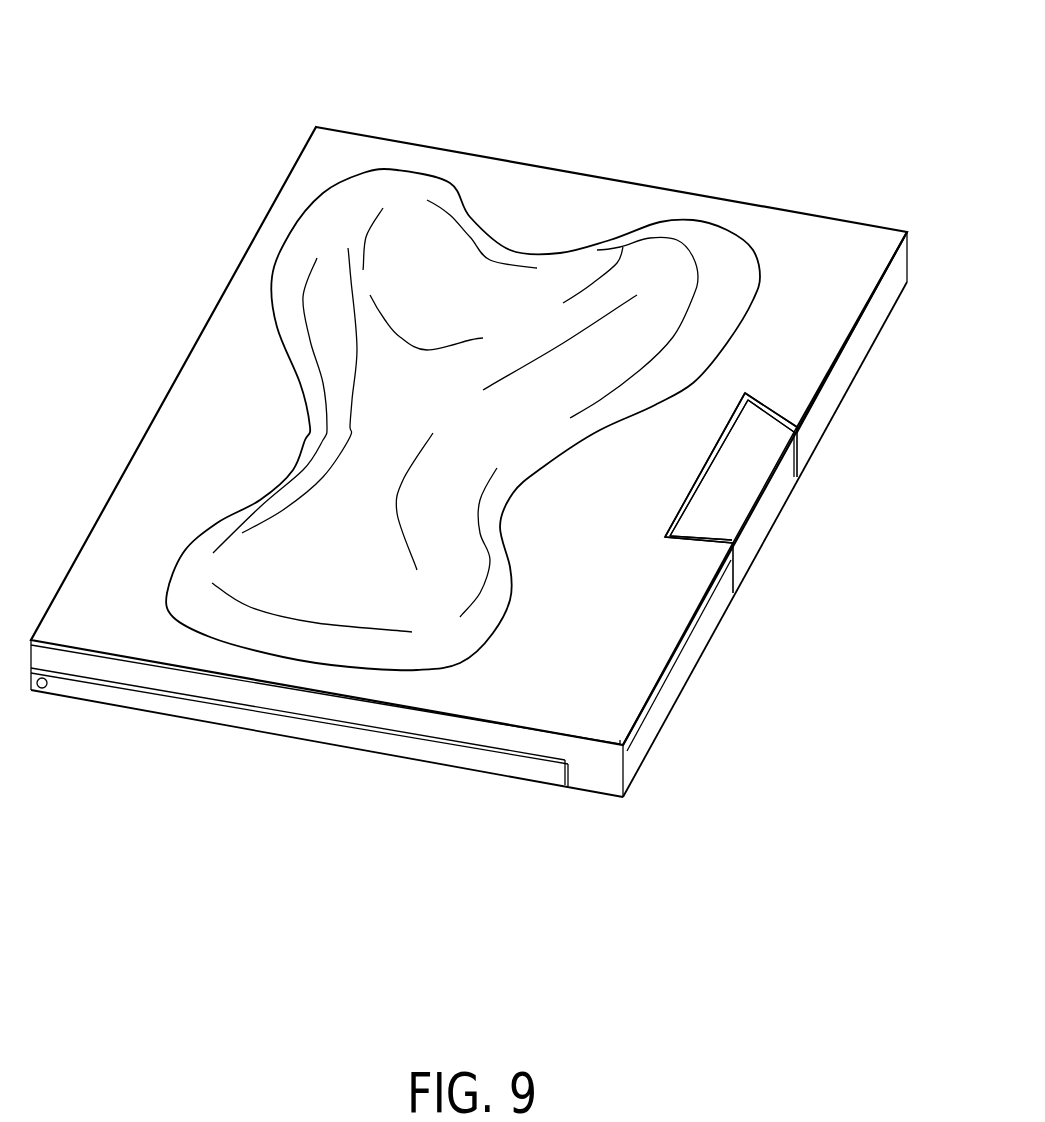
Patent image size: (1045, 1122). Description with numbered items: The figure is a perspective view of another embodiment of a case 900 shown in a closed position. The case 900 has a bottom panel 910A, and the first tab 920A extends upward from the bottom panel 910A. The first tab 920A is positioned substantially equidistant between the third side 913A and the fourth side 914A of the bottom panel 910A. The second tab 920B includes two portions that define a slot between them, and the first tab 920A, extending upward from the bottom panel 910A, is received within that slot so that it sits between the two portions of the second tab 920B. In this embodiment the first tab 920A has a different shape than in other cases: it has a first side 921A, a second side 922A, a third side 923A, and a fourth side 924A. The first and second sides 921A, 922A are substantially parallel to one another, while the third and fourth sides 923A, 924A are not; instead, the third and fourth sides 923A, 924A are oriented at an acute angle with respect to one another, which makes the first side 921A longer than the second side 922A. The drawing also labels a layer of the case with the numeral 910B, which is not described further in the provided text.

The case 900 is at (118, 90).
The fourth side of the bottom panel 914A is at (702, 193).
The bottom panel 910A is at (405, 760).
The intermediate layer 910B is at (212, 683).
The third side of the bottom panel 913A is at (512, 765).
The first tab 920A is at (738, 492).
The second tab 920B is at (852, 363).
The first side of the first tab 921A is at (697, 485).
The second side of the first tab 922A is at (748, 543).
The third side of the first tab 923A is at (700, 542).
The fourth side of the first tab 924A is at (766, 402).